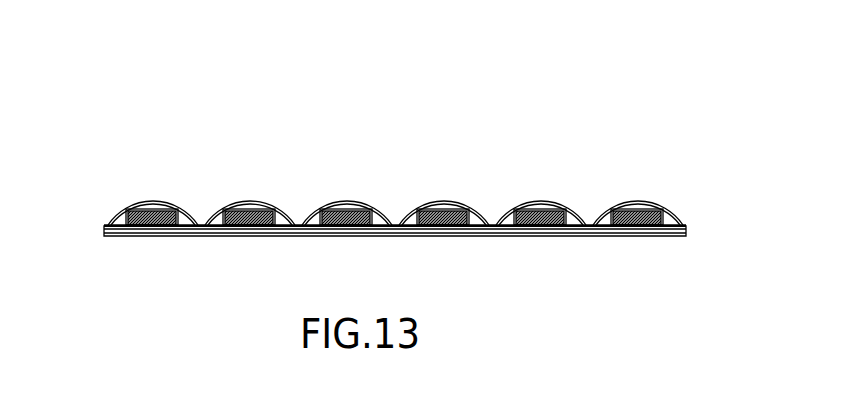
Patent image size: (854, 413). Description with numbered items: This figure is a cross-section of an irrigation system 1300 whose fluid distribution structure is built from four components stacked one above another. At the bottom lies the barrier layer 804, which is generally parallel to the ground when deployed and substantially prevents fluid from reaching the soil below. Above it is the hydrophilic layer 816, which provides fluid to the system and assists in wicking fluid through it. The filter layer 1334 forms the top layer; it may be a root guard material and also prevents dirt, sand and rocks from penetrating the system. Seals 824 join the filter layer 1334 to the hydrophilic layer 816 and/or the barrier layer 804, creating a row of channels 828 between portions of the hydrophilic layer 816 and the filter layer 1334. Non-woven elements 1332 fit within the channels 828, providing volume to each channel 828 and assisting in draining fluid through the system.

The key dome array assembly 1300 is at (419, 165).
The barrier layer 804 is at (668, 233).
The hydrophilic layer 816 is at (692, 225).
The seals 824 is at (291, 211).
The channels 828 is at (355, 210).
The non-woven elements 1332 is at (330, 210).
The filter layer 1334 is at (535, 203).